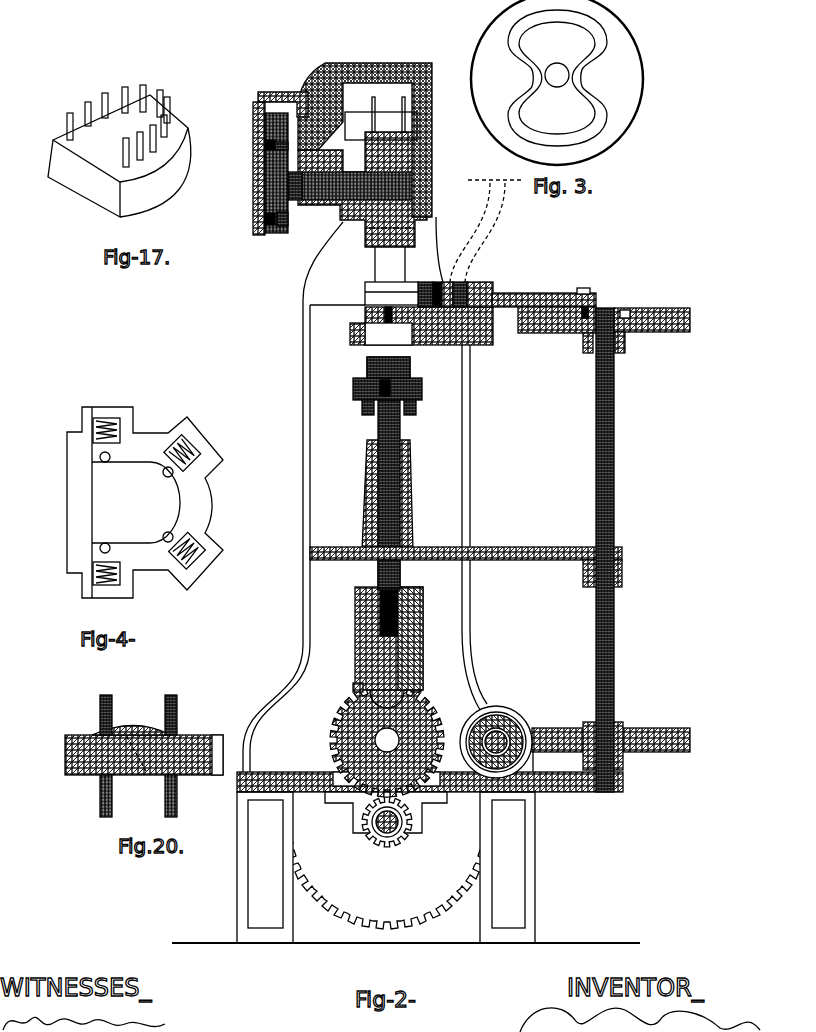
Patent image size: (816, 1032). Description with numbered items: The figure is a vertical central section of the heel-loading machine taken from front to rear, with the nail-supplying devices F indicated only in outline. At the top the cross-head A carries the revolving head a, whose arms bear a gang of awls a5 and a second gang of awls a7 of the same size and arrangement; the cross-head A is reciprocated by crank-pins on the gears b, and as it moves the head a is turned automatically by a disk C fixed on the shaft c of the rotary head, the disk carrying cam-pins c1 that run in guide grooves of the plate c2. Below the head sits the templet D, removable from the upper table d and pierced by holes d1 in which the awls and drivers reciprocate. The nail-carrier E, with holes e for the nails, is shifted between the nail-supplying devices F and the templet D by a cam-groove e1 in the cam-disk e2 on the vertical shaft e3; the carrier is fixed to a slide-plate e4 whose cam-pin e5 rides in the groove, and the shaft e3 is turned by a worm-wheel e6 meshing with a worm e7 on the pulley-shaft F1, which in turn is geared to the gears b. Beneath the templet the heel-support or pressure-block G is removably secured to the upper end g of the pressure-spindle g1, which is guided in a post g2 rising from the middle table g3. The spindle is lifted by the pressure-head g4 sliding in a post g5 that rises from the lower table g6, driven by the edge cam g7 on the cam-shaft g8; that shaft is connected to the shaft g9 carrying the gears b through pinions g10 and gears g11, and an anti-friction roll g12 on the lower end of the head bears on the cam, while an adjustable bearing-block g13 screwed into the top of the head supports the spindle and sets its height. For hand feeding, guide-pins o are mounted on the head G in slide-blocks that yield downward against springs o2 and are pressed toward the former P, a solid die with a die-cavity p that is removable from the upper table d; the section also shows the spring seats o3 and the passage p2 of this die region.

In FIG. 2, the cross-head A is at (332, 84).
In FIG. 2, the revolving head a is at (367, 227).
In FIG. 2, the gang of awls a5 is at (390, 264).
In FIG. 2, the second gang of awls a7 is at (403, 82).
In FIG. 2, the gears b is at (387, 872).
In FIG. 2, the disk C is at (290, 216).
In FIG. 2, the shaft of the rotary head c is at (348, 203).
In FIG. 4, the shaft of the rotary head c is at (105, 462).
In FIG. 2, the cam-pins c1 is at (262, 150).
In FIG. 2, the plate c2 is at (263, 168).
In FIG. 2, the templet D is at (365, 318).
In FIG. 2, the upper table d is at (420, 300).
In FIG. 2, the holes d1 is at (368, 305).
In FIG. 2, the nail-carrier E is at (446, 294).
In FIG. 2, the holes e is at (460, 298).
In FIG. 2, the cam-groove e1 is at (628, 309).
In FIG. 3, the cam-groove e1 is at (592, 46).
In FIG. 2, the cam-disk e2 is at (676, 310).
In FIG. 3, the cam-disk e2 is at (616, 116).
In FIG. 2, the vertical shaft e3 is at (614, 408).
In FIG. 2, the slide-plate e4 is at (530, 300).
In FIG. 2, the cam-pin e5 is at (588, 305).
In FIG. 2, the worm-wheel e6 is at (646, 734).
In FIG. 2, the worm e7 is at (505, 722).
In FIG. 2, the nail-supplying devices F is at (478, 178).
In FIG. 2, the pulley-shaft F1 is at (497, 768).
In FIG. 2, the heel-support or pressure-block G is at (378, 380).
In FIG. 4, the heel-support or pressure-block G is at (109, 511).
In FIG. 20, the heel-support or pressure-block G is at (140, 728).
In FIG. 2, the upper end of the pressure-spindle g is at (412, 410).
In FIG. 2, the pressure-spindle g1 is at (393, 453).
In FIG. 2, the post g2 is at (412, 500).
In FIG. 2, the middle table g3 is at (450, 548).
In FIG. 2, the pressure-head g4 is at (362, 612).
In FIG. 2, the post g5 is at (424, 630).
In FIG. 2, the lower table g6 is at (448, 782).
In FIG. 2, the edge cam g7 is at (350, 708).
In FIG. 2, the cam-shaft g8 is at (384, 742).
In FIG. 2, the shaft g9 is at (380, 838).
In FIG. 2, the pinions g10 is at (407, 836).
In FIG. 2, the gears g11 is at (370, 795).
In FIG. 2, the anti-friction roll g12 is at (366, 672).
In FIG. 2, the adjustable bearing-block g13 is at (402, 573).
In FIG. 2, the guide-pins o is at (368, 370).
In FIG. 4, the guide-pins o is at (110, 456).
In FIG. 20, the guide-pins o is at (112, 708).
In FIG. 2, the springs o2 is at (368, 417).
In FIG. 20, the springs o2 is at (118, 784).
In FIG. 4, the springs o3 is at (120, 425).
In FIG. 2, the former or solid die P is at (352, 336).
In FIG. 2, the die-cavity p is at (388, 334).
In FIG. 2, the passage p2 is at (425, 345).